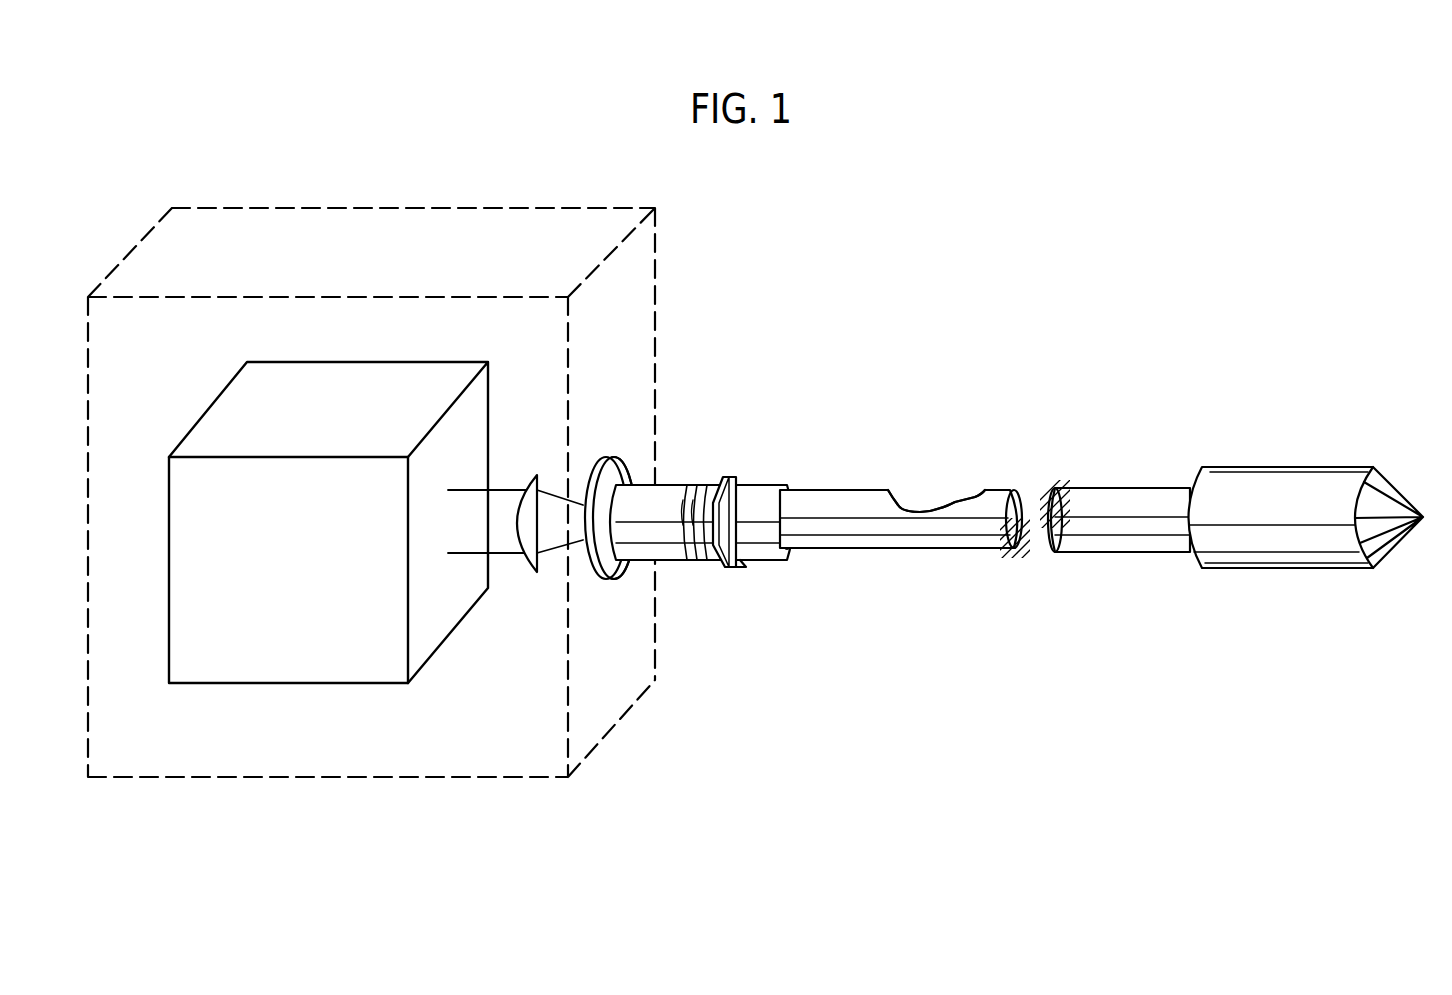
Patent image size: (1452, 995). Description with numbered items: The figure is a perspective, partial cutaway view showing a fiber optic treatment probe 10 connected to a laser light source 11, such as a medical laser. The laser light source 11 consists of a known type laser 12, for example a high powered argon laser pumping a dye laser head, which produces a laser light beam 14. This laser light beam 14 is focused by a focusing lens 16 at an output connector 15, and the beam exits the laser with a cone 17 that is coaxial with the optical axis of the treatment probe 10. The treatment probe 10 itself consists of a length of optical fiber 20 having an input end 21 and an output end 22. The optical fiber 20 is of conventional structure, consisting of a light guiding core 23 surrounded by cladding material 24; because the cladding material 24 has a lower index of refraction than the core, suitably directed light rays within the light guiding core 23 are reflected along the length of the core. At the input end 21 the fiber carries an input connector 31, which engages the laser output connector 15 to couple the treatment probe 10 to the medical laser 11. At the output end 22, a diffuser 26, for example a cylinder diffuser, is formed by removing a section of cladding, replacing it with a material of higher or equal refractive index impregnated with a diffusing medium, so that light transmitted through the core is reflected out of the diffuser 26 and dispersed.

The fiber optic treatment probe 10 is at (917, 432).
The laser light source 11 is at (527, 203).
The laser 12 is at (303, 607).
The laser light beam 14 is at (503, 490).
The output connector 15 is at (673, 484).
The focusing lens 16 is at (533, 566).
The cone 17 is at (548, 491).
The optical fiber 20 is at (905, 504).
The input end 21 is at (797, 532).
The output end 22 is at (1173, 528).
The light guiding core 23 is at (938, 497).
The cladding material 24 is at (892, 490).
The diffuser 26 is at (1283, 493).
The input connector 31 is at (760, 484).